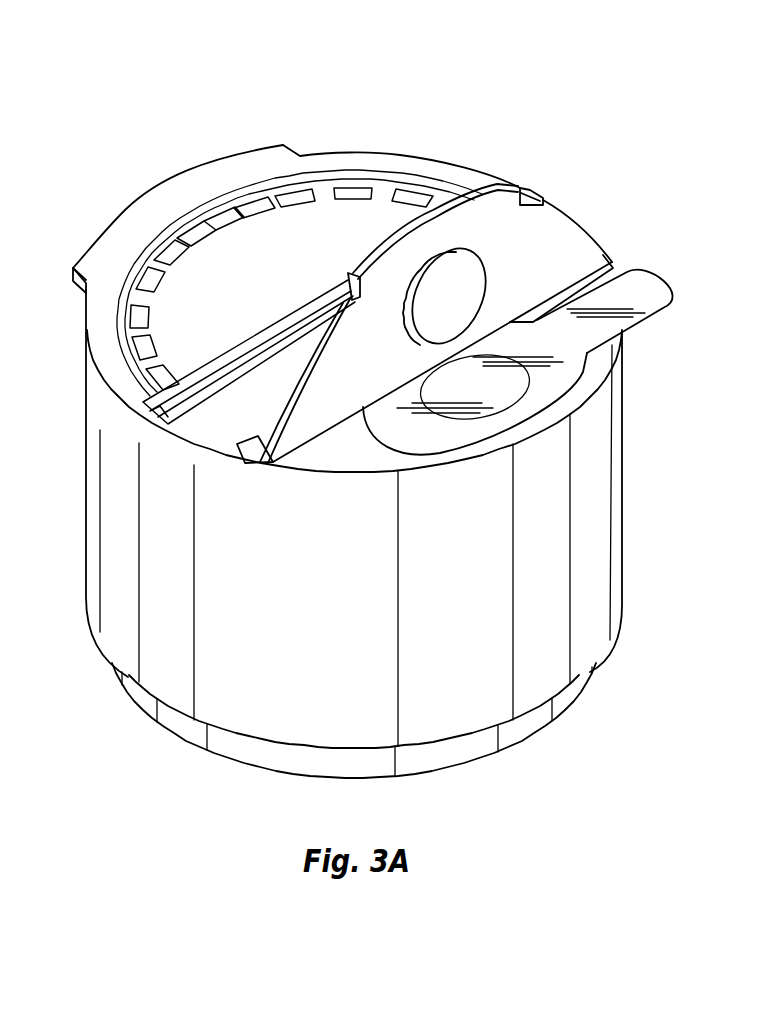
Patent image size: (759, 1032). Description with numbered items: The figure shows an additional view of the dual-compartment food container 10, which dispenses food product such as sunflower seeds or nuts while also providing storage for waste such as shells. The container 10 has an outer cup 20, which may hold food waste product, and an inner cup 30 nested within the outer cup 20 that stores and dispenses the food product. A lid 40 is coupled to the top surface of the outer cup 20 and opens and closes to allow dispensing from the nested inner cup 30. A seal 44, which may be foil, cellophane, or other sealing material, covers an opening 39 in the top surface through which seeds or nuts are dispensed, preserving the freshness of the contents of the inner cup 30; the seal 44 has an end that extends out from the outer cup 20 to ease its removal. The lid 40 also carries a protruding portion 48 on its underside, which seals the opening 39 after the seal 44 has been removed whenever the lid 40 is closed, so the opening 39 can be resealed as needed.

The dual-compartment food container 10 is at (413, 100).
The outer cup 20 is at (622, 549).
The inner cup 30 is at (593, 670).
The opening 39 is at (487, 392).
The lid 40 is at (540, 220).
The seal 44 is at (647, 285).
The protruding portion 48 is at (463, 283).